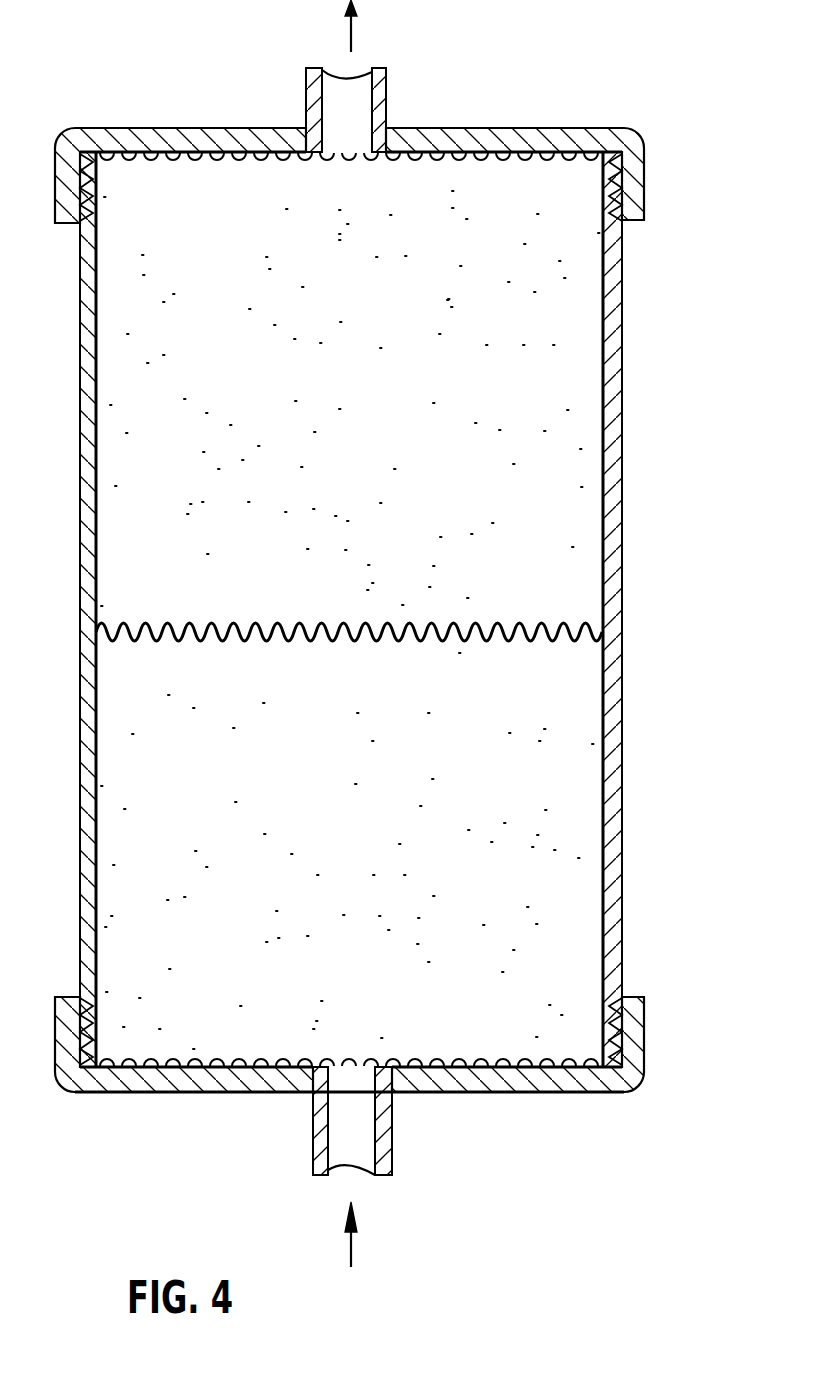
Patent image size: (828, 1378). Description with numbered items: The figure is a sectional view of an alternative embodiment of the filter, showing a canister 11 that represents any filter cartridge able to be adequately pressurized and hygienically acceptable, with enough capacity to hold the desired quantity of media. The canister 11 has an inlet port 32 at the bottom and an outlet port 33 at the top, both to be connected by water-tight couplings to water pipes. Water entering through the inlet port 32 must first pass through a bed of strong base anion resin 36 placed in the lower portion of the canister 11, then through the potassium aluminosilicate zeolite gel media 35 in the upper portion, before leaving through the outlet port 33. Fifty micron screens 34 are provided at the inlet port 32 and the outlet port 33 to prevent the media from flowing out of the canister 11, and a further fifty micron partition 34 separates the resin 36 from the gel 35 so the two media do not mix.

The canister 11 is at (629, 430).
The inlet port 32 is at (392, 1126).
The outlet port 33 is at (386, 96).
The fifty micron screen 34 is at (213, 160).
The zeolite media 35 is at (368, 412).
The anion media 36 is at (366, 808).